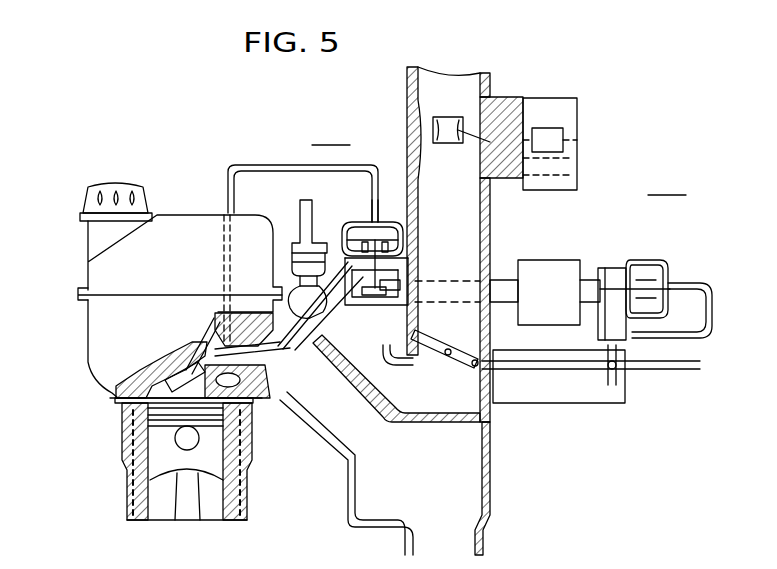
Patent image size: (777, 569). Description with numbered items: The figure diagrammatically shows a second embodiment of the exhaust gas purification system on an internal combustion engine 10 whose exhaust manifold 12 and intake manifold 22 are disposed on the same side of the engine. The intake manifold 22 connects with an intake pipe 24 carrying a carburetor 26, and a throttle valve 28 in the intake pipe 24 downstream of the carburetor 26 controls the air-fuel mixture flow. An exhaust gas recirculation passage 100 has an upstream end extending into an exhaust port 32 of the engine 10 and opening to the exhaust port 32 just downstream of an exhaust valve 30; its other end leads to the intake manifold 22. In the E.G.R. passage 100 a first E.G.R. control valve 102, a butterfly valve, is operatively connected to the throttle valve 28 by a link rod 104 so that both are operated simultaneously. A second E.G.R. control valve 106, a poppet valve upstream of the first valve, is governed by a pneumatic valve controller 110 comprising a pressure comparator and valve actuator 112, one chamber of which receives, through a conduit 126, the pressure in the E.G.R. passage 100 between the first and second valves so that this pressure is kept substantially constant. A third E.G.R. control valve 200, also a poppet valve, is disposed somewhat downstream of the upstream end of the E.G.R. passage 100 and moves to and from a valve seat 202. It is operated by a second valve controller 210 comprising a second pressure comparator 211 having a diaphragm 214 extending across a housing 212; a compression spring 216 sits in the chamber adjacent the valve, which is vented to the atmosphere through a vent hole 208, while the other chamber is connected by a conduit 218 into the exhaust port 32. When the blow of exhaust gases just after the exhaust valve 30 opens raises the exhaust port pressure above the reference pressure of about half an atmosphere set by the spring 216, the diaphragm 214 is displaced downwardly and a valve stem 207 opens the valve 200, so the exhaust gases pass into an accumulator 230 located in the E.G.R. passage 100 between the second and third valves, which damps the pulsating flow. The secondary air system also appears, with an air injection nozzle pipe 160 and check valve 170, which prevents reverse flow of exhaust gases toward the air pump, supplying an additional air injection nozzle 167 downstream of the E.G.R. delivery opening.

The internal combustion engine 10 is at (191, 213).
The exhaust manifold 12 is at (349, 499).
The intake manifold 22 is at (428, 421).
The intake pipe 24 is at (480, 208).
The carburetor 26 is at (507, 103).
The throttle valve 28 is at (450, 364).
The exhaust valve 30 is at (120, 400).
The exhaust port 32 is at (262, 368).
The exhaust gas recirculation passage 100 is at (258, 388).
The first E.G.R. control valve 102 is at (614, 378).
The link rod 104 is at (523, 362).
The second E.G.R. control valve 106 is at (610, 285).
The pneumatic valve controller 110 is at (664, 238).
The pressure comparator and valve actuator 112 is at (660, 270).
The conduit 126 is at (713, 303).
The air injection nozzle pipe 160 is at (300, 294).
The additional air injection nozzle 167 is at (215, 316).
The check valve 170 is at (303, 241).
The third E.G.R. control valve 200 is at (392, 297).
The valve seat 202 is at (400, 284).
The valve stem 207 is at (397, 271).
The vent hole 208 is at (400, 259).
The second valve controller 210 is at (333, 163).
The second pressure comparator 211 is at (350, 224).
The housing 212 is at (400, 231).
The diaphragm 214 is at (378, 221).
The compression spring 216 is at (400, 247).
The conduit 218 is at (270, 165).
The accumulator 230 is at (560, 270).